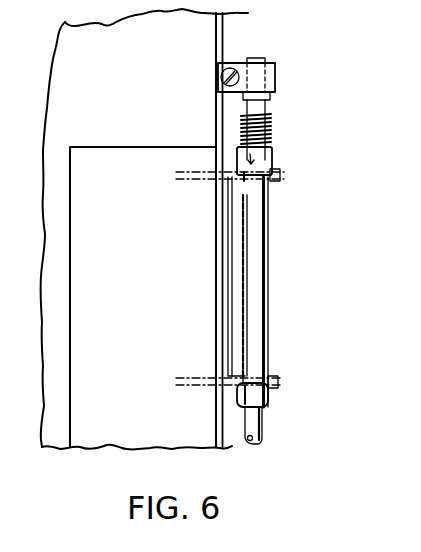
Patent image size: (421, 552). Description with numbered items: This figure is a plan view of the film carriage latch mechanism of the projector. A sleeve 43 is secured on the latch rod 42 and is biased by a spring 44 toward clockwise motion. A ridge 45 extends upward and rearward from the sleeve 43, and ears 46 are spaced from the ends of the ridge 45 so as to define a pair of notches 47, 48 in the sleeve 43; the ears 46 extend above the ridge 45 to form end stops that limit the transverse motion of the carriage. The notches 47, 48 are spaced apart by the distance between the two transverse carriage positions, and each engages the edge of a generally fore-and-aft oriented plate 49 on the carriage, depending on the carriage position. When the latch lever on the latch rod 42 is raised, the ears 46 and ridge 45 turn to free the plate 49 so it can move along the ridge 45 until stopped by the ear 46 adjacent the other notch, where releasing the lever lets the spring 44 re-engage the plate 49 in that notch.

The latch rod 42 is at (263, 432).
The sleeve 43 is at (268, 300).
The spring 44 is at (262, 133).
The ridge 45 is at (229, 306).
The ears 46 is at (237, 158).
The notch 47 is at (250, 180).
The notch 48 is at (243, 381).
The plate 49 is at (281, 177).